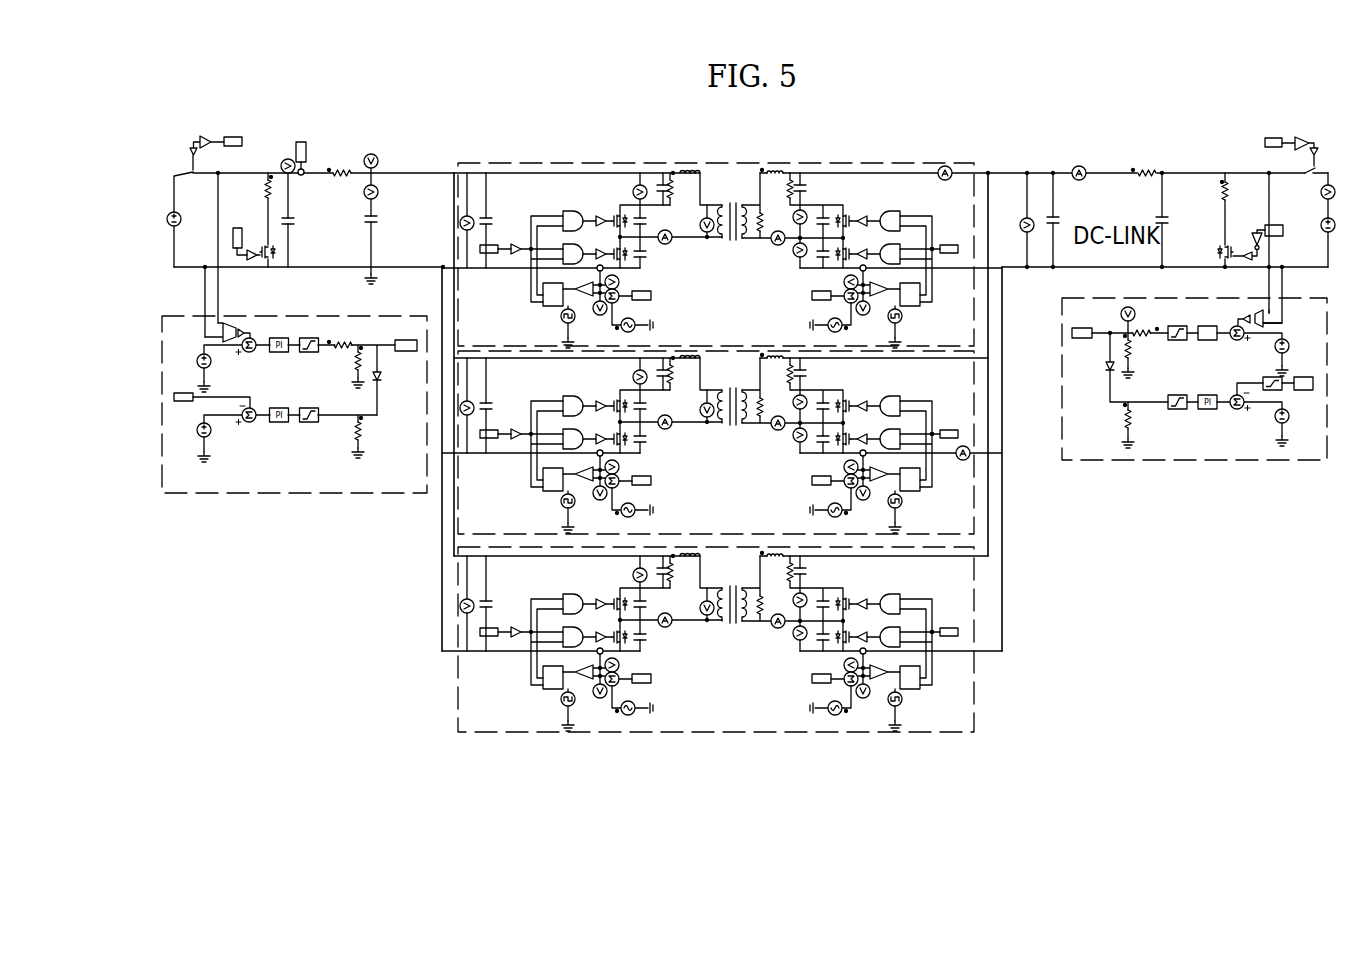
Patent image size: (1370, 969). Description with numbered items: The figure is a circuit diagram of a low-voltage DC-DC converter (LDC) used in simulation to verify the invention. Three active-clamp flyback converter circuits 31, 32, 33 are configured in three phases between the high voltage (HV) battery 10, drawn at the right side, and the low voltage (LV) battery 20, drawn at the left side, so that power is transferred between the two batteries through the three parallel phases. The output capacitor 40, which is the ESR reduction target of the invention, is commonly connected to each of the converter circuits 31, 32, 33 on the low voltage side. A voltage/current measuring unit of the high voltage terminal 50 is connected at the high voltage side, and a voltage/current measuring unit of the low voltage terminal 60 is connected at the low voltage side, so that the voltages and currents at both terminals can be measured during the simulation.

The high voltage (HV) battery 10 is at (1334, 210).
The low voltage (LV) battery 20 is at (172, 212).
The active-clamp flyback converter circuit 31 is at (685, 163).
The active-clamp flyback converter circuit 32 is at (975, 507).
The active-clamp flyback converter circuit 33 is at (975, 703).
The output capacitor 40 is at (377, 213).
The voltage/current measuring unit of a high voltage terminal (HV) 50 is at (1175, 460).
The voltage/current measuring unit of a low voltage terminal (LV) 60 is at (218, 493).